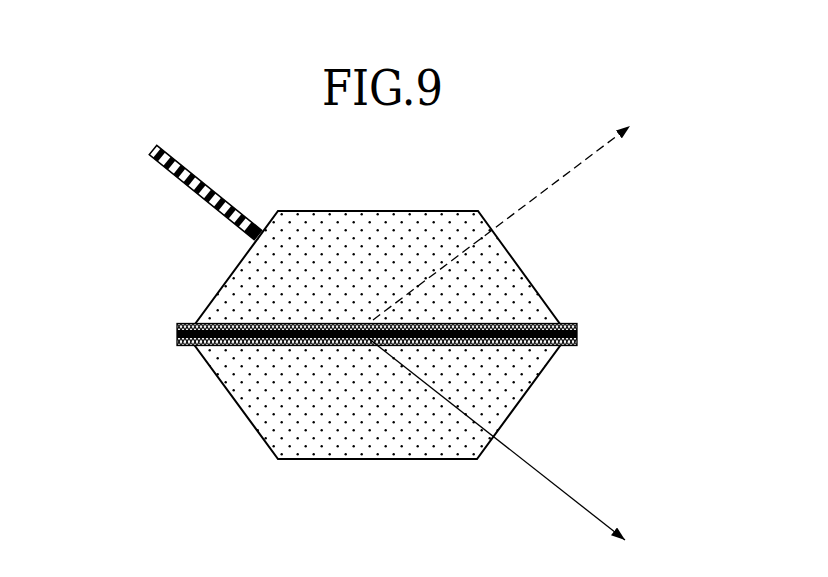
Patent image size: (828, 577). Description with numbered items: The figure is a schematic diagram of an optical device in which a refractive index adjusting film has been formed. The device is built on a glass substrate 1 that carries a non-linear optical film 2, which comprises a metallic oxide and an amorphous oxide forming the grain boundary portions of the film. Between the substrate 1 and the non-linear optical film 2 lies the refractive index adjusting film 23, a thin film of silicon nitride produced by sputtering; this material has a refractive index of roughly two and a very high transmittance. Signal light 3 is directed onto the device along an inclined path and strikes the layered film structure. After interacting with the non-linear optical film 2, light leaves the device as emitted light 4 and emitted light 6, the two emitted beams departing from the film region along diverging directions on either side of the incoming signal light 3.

The glass substrate 1 is at (518, 373).
The non-linear optical film 2 is at (237, 348).
The signal light 3 is at (363, 329).
The emitted light 4 is at (500, 439).
The emitted light 6 is at (521, 207).
The refractive index adjusting film 23 is at (540, 323).